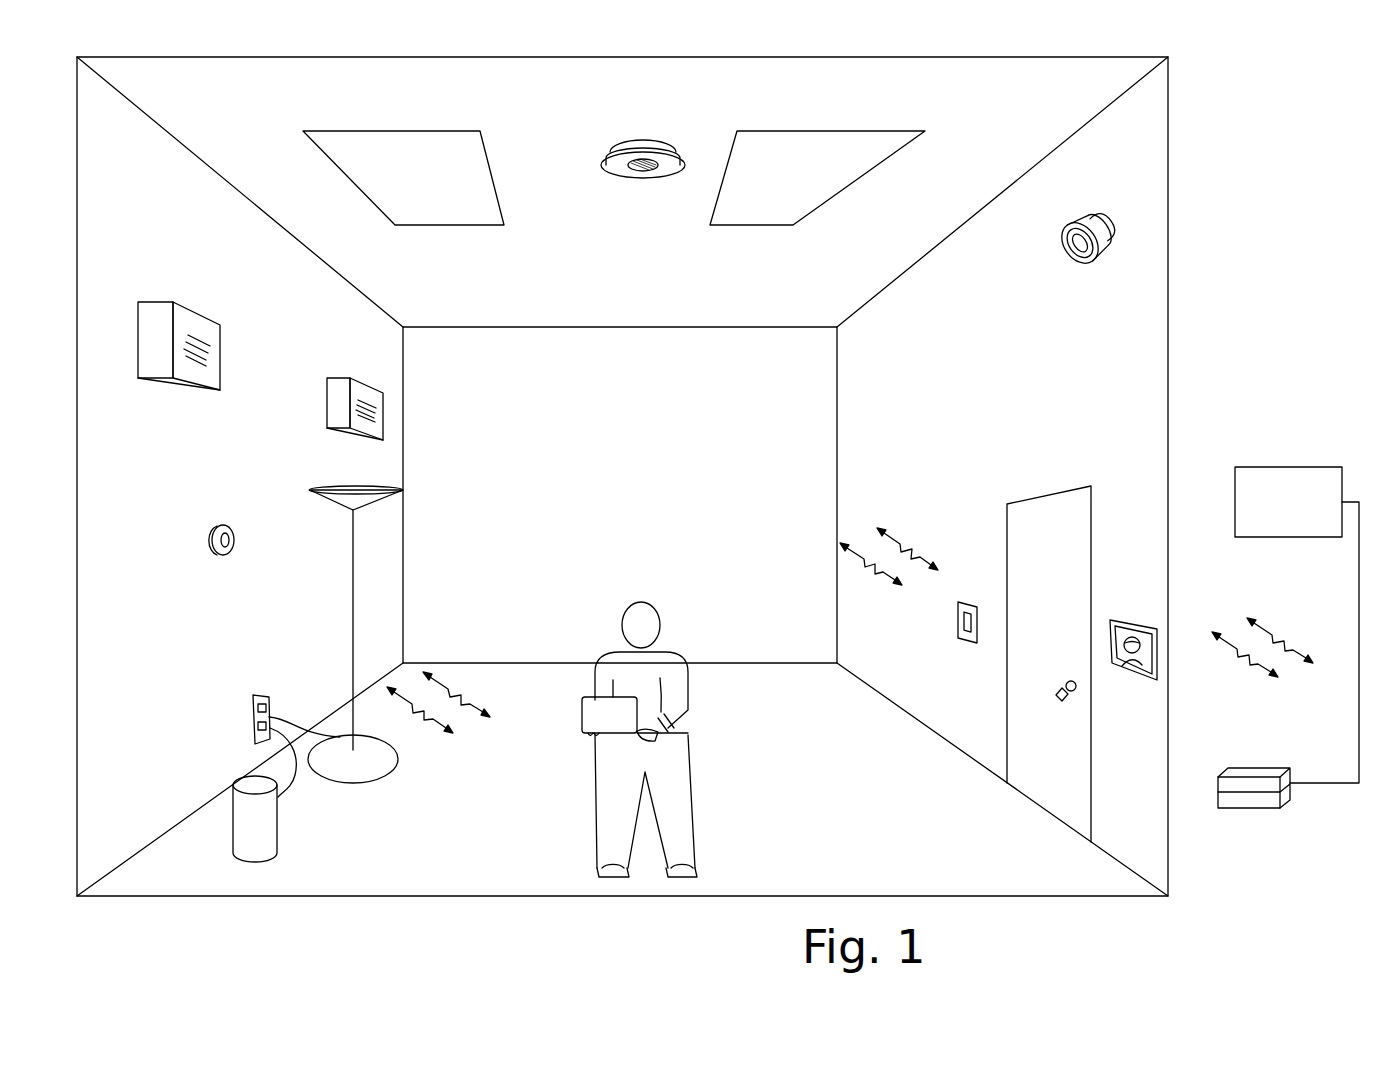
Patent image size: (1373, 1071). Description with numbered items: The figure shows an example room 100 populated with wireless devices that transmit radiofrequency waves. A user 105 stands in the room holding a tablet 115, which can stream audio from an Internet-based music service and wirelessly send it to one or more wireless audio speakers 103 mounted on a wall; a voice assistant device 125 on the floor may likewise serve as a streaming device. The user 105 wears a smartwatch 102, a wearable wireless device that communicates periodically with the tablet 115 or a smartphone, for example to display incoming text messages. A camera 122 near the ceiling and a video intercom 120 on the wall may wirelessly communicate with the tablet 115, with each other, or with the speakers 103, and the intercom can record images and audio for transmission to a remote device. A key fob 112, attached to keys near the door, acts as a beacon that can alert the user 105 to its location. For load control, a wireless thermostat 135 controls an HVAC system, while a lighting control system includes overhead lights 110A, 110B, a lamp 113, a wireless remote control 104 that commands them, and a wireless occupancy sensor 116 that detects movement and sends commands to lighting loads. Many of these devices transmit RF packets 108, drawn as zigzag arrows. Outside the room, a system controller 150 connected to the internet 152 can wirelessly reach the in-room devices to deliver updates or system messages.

The room 100 is at (686, 419).
The smartwatch 102 is at (687, 722).
The wireless audio speakers 103 is at (220, 372).
The wireless remote control 104 is at (958, 628).
The user 105 is at (660, 762).
The RF packets 108 is at (445, 690).
The overhead light 110A is at (465, 170).
The overhead light 110B is at (845, 153).
The key fob 112 is at (1057, 695).
The lamp 113 is at (400, 492).
The tablet 115 is at (580, 716).
The wireless occupancy sensor 116 is at (670, 168).
The video intercom 120 is at (1147, 676).
The camera 122 is at (1082, 268).
The voice assistant device 125 is at (263, 835).
The wireless thermostat 135 is at (232, 550).
The system controller 150 is at (1275, 770).
The internet 152 is at (1278, 467).